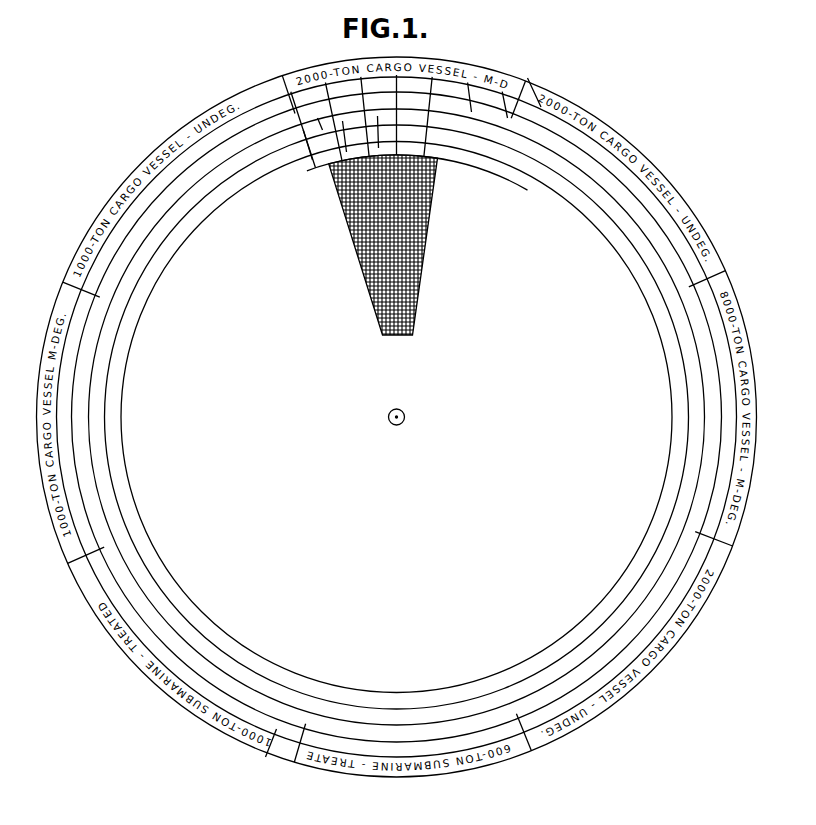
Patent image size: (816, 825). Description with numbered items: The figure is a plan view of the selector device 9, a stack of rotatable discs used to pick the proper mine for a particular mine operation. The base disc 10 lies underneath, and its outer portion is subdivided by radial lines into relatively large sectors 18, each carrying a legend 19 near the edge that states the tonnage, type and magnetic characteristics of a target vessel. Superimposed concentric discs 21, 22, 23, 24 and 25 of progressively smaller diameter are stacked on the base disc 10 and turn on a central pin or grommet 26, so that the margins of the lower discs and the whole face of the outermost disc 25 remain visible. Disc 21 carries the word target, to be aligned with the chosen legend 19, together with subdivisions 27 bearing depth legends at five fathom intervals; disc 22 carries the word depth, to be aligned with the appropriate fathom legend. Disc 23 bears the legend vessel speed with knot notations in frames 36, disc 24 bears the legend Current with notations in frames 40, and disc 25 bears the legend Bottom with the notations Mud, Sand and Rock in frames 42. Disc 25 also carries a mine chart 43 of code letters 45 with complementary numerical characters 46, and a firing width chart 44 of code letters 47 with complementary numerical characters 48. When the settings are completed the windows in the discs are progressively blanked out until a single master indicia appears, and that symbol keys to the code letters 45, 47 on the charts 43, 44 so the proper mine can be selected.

The selector device 9 is at (560, 87).
The base disc 10 is at (684, 196).
The sectors 18 is at (70, 285).
The legends 19 is at (136, 182).
The disc 21 is at (618, 705).
The disc 22 is at (302, 770).
The disc 23 is at (262, 690).
The disc 24 is at (328, 694).
The outermost disc 25 is at (457, 617).
The pin or grommet 26 is at (400, 409).
The subdivisions 27 is at (300, 90).
The frames 36 is at (285, 126).
The frames 40 is at (415, 128).
The frames 42 is at (326, 165).
The chart 43 is at (231, 426).
The chart 44 is at (597, 423).
The code letters 45 is at (190, 474).
The numerical characters 46 is at (246, 446).
The code letters 47 is at (436, 434).
The numerical characters 48 is at (474, 505).